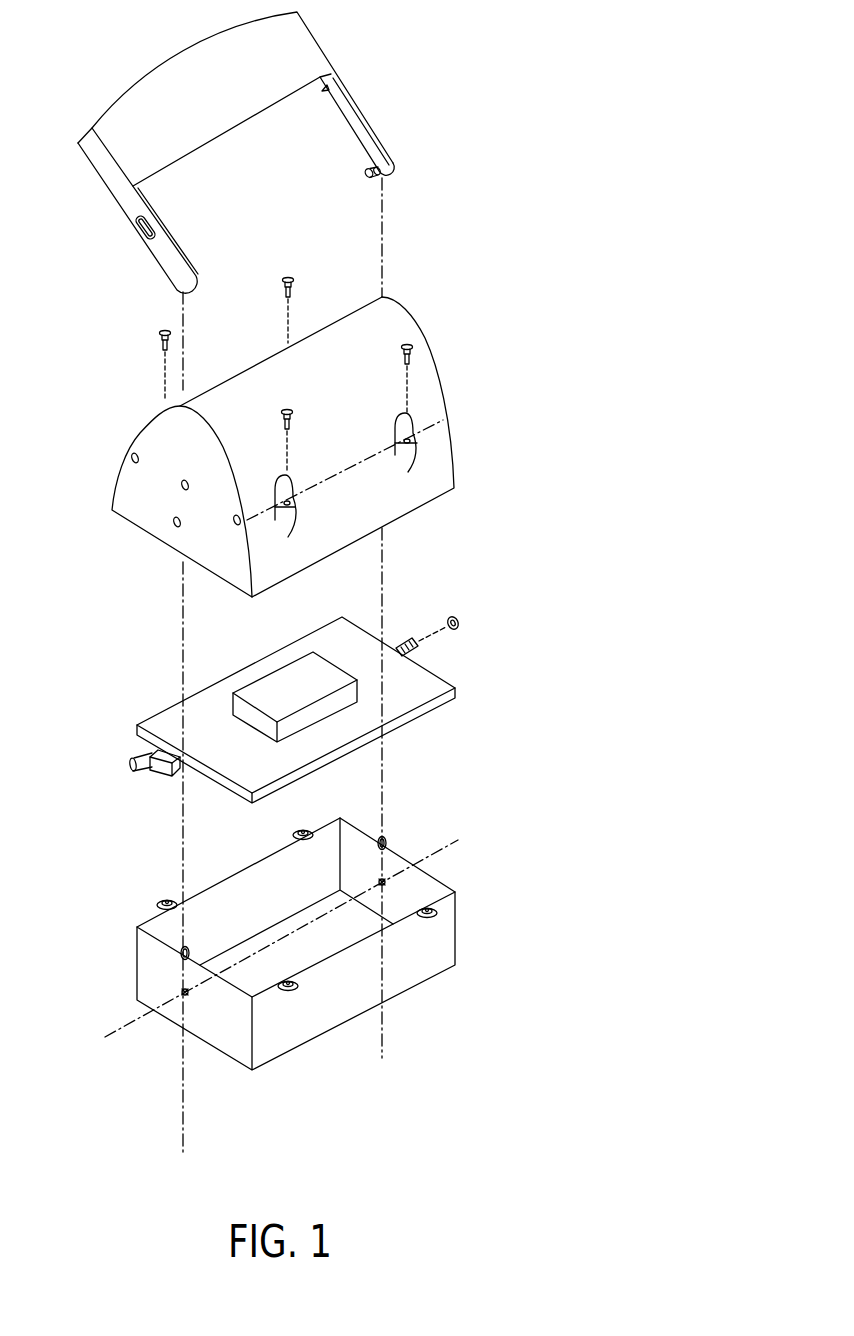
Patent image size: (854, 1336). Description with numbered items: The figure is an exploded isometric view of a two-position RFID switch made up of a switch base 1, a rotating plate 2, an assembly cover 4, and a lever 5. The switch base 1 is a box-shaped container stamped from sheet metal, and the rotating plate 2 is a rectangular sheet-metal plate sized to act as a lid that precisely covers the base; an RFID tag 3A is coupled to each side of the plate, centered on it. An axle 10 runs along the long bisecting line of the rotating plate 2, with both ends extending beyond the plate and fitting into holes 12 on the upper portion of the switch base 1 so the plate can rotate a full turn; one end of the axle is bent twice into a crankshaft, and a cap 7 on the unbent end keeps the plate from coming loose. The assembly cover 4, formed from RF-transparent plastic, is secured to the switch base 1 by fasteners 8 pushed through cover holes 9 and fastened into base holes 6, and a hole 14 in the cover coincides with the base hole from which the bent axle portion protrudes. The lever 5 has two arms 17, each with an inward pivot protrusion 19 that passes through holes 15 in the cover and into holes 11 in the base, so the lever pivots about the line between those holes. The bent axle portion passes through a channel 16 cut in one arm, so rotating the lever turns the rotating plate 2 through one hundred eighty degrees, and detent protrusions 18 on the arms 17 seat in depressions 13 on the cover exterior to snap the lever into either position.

The switch base 1 is at (417, 867).
The rotating plate 2 is at (437, 678).
The RFID tag 3A is at (270, 680).
The assembly cover 4 is at (438, 368).
The lever 5 is at (317, 43).
The base holes 6 is at (300, 831).
The cap 7 is at (463, 618).
The fasteners 8 is at (163, 328).
The cover holes 9 is at (412, 442).
The axle 10 is at (162, 773).
The holes 11 is at (387, 884).
The holes 12 is at (388, 840).
The depressions 13 is at (124, 449).
The hole 14 is at (167, 480).
The holes 15 is at (167, 517).
The channel 16 is at (124, 221).
The arms 17 is at (357, 110).
The detent protrusions 18 is at (308, 98).
The pivot protrusion 19 is at (358, 166).